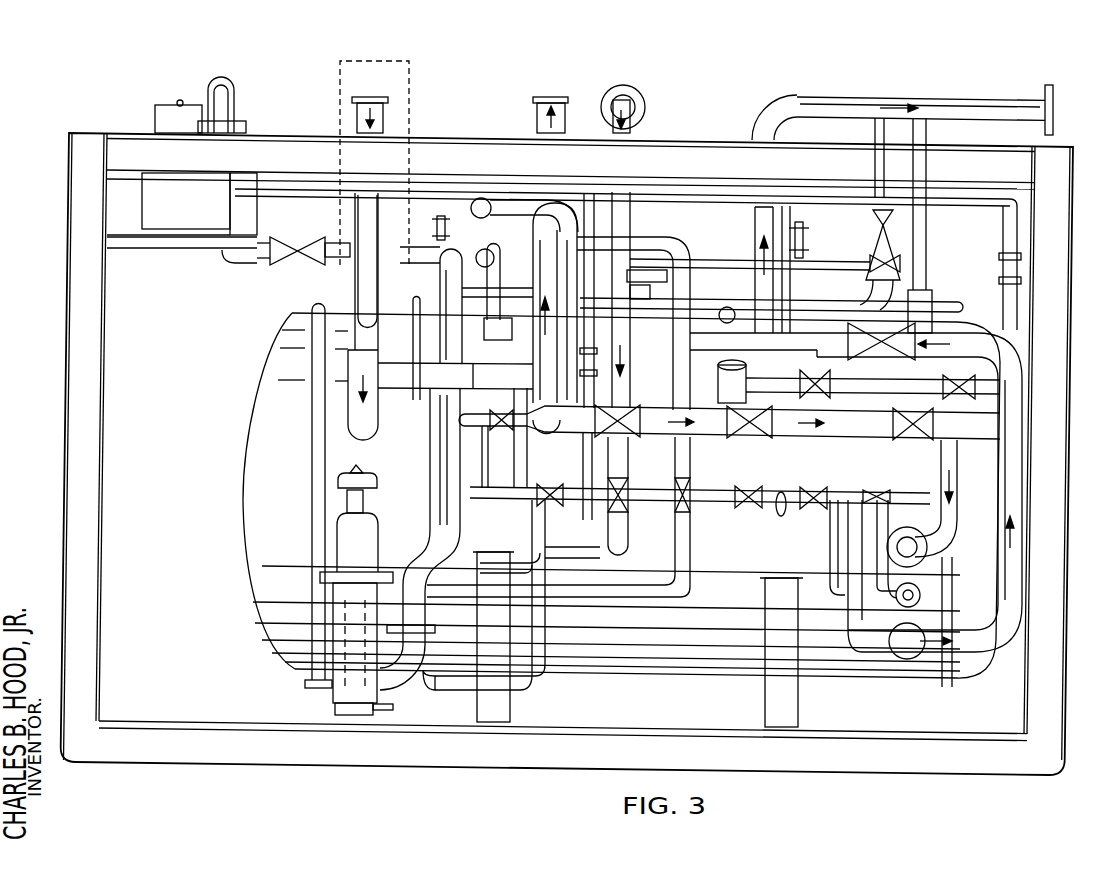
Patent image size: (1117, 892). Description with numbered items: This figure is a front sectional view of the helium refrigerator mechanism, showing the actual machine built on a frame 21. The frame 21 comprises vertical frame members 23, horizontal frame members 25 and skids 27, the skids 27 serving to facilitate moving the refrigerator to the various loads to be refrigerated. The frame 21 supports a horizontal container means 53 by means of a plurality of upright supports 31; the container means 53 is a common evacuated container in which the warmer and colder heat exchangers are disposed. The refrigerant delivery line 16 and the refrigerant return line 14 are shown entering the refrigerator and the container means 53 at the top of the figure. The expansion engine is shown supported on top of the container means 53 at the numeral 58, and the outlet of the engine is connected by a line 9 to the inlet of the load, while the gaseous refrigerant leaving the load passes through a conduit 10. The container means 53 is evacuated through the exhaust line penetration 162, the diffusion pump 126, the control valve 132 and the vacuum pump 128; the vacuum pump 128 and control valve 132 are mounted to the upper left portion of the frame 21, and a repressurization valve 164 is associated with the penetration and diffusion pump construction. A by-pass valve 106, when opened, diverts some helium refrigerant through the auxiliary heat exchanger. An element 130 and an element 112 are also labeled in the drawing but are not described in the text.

The frame 21 is at (57, 604).
The vertical frame members 23 is at (77, 348).
The horizontal frame members 25 is at (472, 152).
The skids 27 is at (338, 768).
The container means 53 is at (238, 518).
The upright supports 31 is at (512, 713).
The vacuum pump 128 is at (190, 215).
The control valve 132 is at (312, 255).
The expansion engine 58 is at (379, 60).
The line 9 is at (386, 128).
The conduit 10 is at (553, 98).
The refrigerant delivery line 16 is at (633, 135).
The refrigerant return line 14 is at (770, 100).
The drain pipe 130 is at (440, 498).
The diffusion pump 126 is at (337, 685).
The exhaust line penetration 162 is at (343, 527).
The repressurization valve 164 is at (337, 473).
The by-pass valve 106 is at (875, 490).
The pipe 112 is at (845, 555).